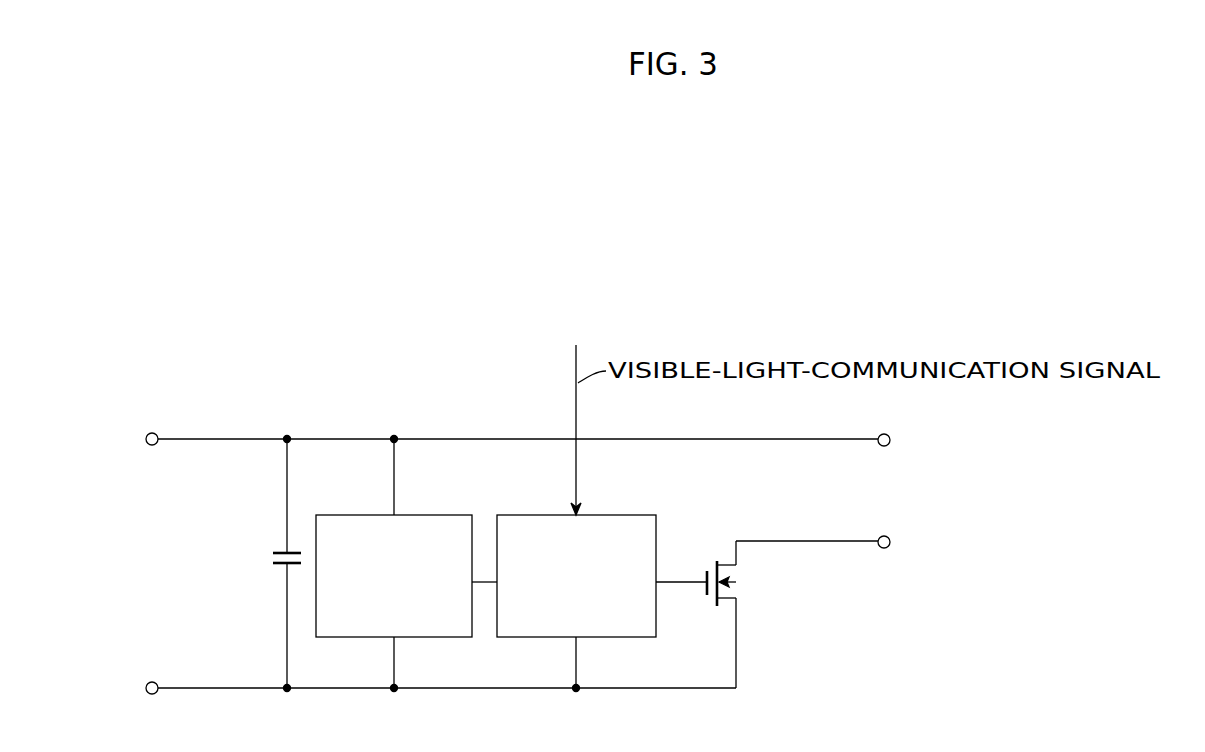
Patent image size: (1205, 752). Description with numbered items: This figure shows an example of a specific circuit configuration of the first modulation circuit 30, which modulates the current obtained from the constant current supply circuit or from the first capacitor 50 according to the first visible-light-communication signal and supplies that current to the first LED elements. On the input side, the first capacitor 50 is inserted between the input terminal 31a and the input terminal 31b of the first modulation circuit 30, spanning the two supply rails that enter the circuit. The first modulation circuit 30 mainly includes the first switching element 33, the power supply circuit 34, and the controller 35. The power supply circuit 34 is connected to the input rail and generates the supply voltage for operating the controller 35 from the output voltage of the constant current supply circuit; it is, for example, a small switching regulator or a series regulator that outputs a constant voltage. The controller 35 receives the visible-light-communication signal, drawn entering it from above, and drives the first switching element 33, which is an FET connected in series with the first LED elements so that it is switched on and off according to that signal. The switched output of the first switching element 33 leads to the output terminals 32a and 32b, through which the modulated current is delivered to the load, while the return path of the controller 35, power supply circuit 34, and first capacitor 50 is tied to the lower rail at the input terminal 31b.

The first modulation circuit 30 is at (761, 303).
The input terminal 31a is at (147, 433).
The input terminal 31b is at (147, 682).
The output terminal 32a is at (889, 435).
The output terminal 32b is at (889, 537).
The first switching element 33 is at (740, 586).
The power supply circuit 34 is at (420, 514).
The controller 35 is at (620, 514).
The first capacitor 50 is at (272, 562).